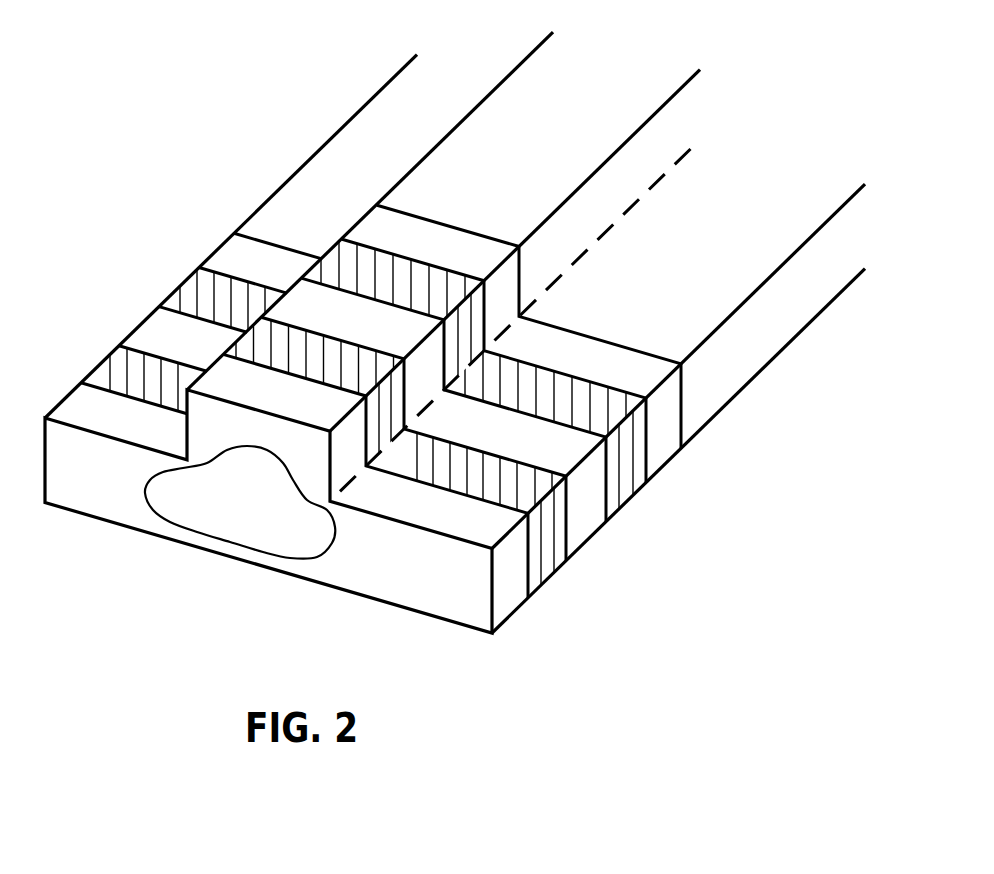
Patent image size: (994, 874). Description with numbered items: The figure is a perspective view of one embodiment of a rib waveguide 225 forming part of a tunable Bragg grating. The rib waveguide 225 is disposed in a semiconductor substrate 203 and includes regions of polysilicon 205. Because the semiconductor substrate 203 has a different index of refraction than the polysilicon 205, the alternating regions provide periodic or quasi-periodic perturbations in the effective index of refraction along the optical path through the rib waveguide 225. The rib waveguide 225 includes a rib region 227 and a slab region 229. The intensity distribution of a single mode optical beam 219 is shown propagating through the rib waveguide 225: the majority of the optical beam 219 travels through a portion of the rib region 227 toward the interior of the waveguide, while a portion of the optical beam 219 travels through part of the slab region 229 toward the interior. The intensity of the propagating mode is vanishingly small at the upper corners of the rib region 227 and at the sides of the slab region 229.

The semiconductor substrate 203 is at (517, 611).
The polysilicon 205 is at (560, 566).
The optical beam 219 is at (261, 550).
The rib waveguide 225 is at (853, 139).
The rib region 227 is at (240, 498).
The slab region 229 is at (444, 596).